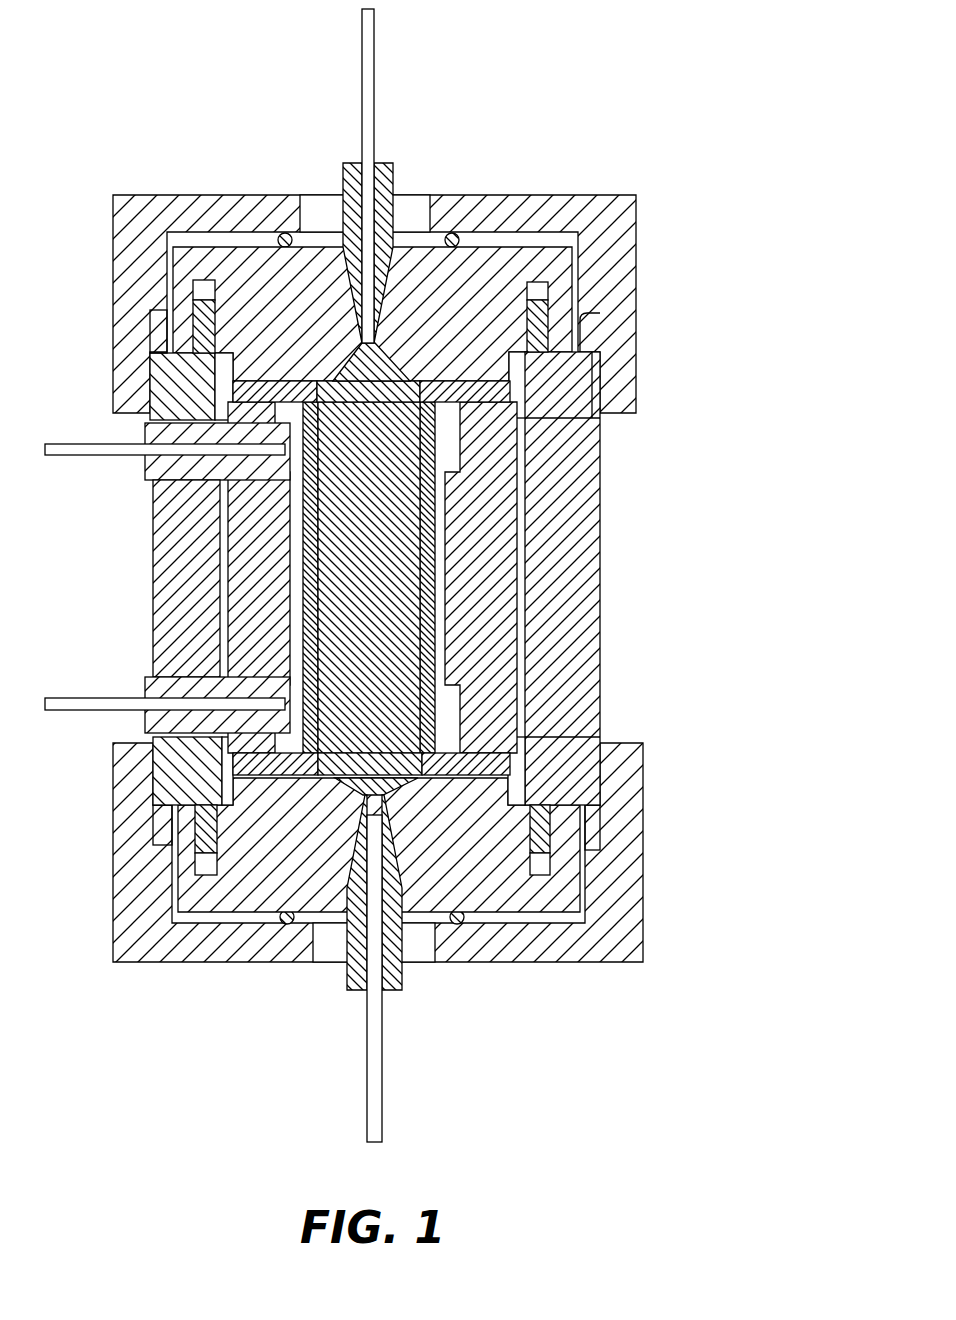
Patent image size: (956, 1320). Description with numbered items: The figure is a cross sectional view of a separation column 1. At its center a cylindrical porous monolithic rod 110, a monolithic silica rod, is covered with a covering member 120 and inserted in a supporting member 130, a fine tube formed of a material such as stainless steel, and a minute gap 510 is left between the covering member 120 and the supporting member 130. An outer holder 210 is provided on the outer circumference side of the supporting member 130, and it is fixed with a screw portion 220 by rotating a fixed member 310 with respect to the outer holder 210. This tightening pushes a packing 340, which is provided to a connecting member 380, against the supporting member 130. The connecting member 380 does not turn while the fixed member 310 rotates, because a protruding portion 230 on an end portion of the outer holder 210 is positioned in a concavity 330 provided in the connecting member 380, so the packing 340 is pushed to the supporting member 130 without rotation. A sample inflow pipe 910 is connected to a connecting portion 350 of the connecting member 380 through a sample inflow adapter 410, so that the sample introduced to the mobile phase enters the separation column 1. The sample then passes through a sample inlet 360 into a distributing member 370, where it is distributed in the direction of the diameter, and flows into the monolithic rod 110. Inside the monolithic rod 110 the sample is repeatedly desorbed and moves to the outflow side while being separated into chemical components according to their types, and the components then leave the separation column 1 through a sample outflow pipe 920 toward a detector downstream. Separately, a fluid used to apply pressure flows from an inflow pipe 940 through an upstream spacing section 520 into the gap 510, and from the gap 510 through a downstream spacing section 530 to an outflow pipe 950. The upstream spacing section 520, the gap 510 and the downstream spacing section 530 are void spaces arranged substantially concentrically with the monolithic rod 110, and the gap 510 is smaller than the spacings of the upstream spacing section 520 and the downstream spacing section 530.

The separation column 1 is at (390, 575).
The cylindrical porous monolithic rod 110 is at (392, 558).
The covering member 120 is at (430, 573).
The supporting member 130 is at (507, 684).
The outer holder 210 is at (600, 745).
The screw portion 220 is at (598, 356).
The protruding portion 230 is at (620, 236).
The fixed member 310 is at (421, 304).
The concavity 330 is at (538, 292).
The packing 340 is at (597, 405).
The connecting portion 350 is at (343, 245).
The sample inlet 360 is at (362, 345).
The distributing member 370 is at (455, 408).
The connecting member 380 is at (483, 257).
The sample inflow adapter 410 is at (393, 163).
The gap 510 is at (300, 548).
The upstream spacing section 520 is at (285, 462).
The downstream spacing section 530 is at (285, 654).
The sample inflow pipe 910 is at (362, 52).
The sample outflow pipe 920 is at (382, 1055).
The inflow pipe 940 is at (70, 445).
The outflow pipe 950 is at (73, 712).